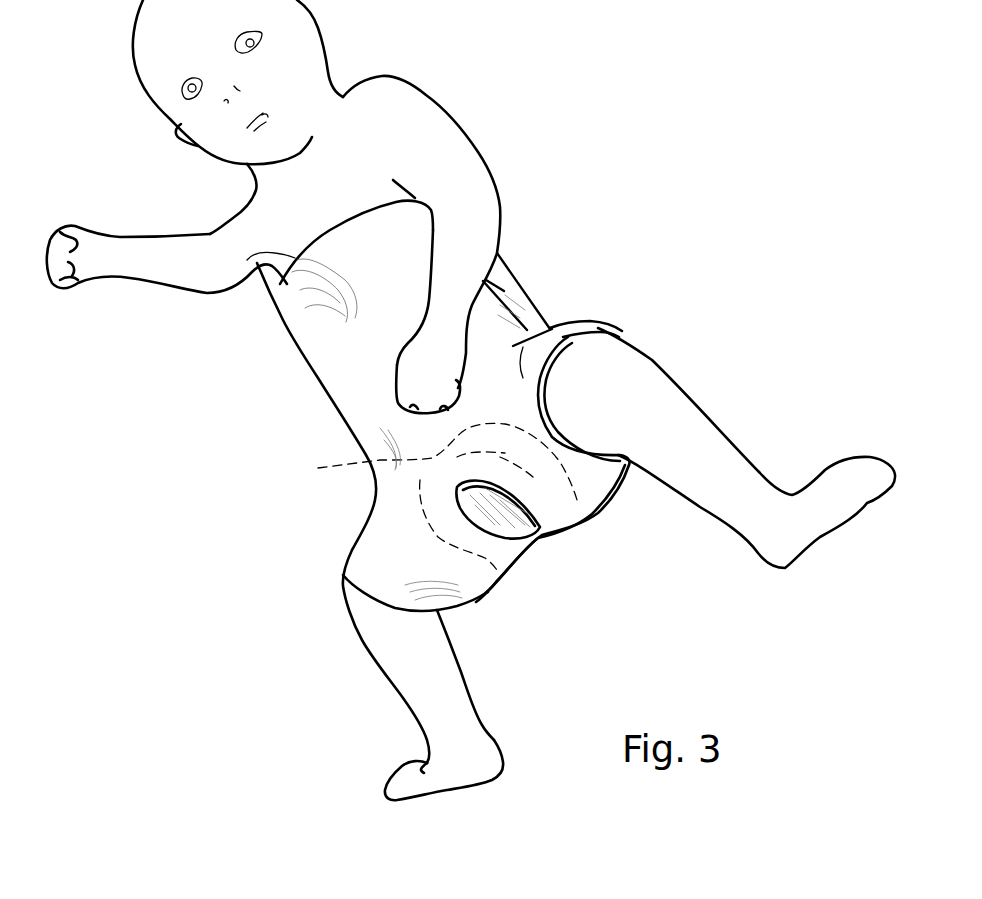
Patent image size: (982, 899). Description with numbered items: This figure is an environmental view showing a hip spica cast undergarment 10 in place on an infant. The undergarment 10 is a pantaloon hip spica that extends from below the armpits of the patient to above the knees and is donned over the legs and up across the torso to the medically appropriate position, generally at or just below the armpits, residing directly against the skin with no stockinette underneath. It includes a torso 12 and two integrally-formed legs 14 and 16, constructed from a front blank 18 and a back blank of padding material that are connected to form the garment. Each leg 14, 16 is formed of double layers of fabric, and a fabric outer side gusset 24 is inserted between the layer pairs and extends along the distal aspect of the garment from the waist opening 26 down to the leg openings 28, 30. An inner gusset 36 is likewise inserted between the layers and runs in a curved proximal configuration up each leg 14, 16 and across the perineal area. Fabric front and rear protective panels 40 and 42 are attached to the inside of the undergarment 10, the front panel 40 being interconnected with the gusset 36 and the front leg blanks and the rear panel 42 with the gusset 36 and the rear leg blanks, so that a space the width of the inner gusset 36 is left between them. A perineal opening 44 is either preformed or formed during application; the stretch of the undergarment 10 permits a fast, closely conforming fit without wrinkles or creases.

The hip spica undergarment 10 is at (657, 252).
The torso 12 is at (318, 333).
The leg 14 is at (384, 575).
The leg 16 is at (540, 320).
The front blank 18 is at (352, 382).
The outer side gusset 24 is at (513, 282).
The waist opening 26 is at (248, 275).
The leg opening 28 is at (388, 535).
The leg opening 30 is at (598, 441).
The inner gusset 36 is at (483, 556).
The front protective panel 40 is at (429, 461).
The rear protective panel 42 is at (590, 510).
The perineal opening 44 is at (457, 487).